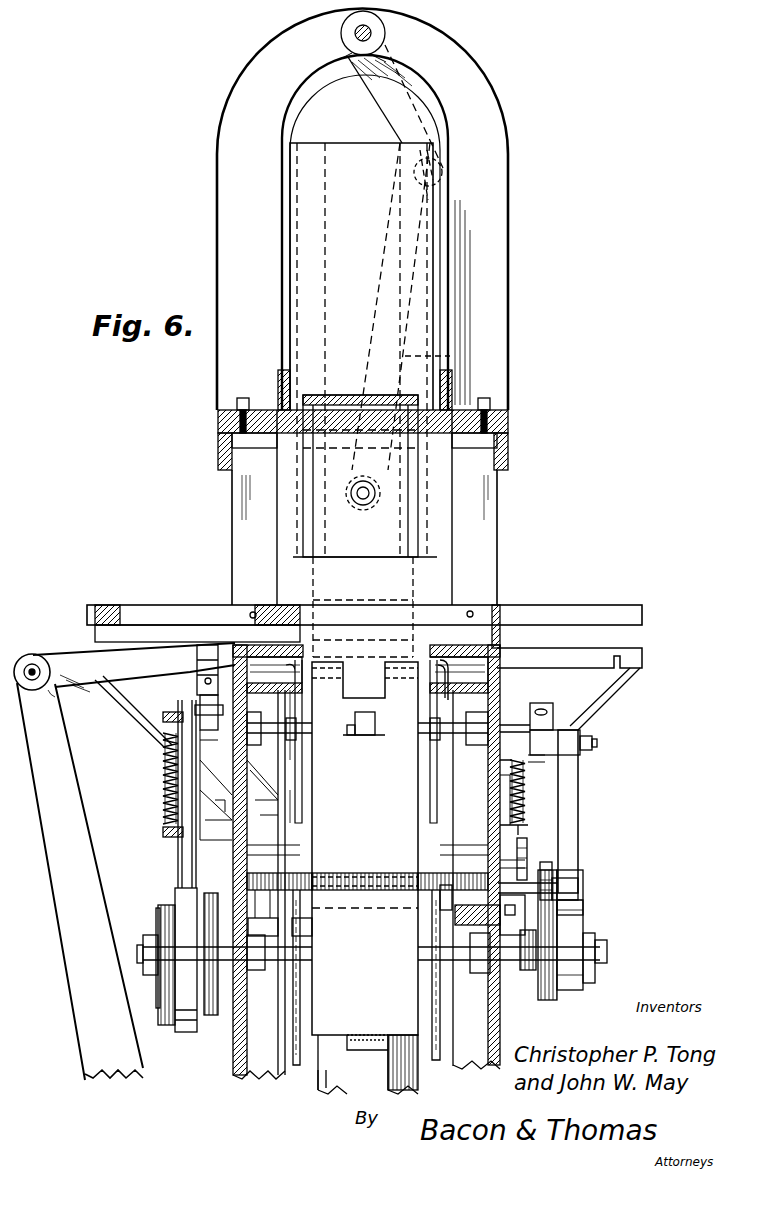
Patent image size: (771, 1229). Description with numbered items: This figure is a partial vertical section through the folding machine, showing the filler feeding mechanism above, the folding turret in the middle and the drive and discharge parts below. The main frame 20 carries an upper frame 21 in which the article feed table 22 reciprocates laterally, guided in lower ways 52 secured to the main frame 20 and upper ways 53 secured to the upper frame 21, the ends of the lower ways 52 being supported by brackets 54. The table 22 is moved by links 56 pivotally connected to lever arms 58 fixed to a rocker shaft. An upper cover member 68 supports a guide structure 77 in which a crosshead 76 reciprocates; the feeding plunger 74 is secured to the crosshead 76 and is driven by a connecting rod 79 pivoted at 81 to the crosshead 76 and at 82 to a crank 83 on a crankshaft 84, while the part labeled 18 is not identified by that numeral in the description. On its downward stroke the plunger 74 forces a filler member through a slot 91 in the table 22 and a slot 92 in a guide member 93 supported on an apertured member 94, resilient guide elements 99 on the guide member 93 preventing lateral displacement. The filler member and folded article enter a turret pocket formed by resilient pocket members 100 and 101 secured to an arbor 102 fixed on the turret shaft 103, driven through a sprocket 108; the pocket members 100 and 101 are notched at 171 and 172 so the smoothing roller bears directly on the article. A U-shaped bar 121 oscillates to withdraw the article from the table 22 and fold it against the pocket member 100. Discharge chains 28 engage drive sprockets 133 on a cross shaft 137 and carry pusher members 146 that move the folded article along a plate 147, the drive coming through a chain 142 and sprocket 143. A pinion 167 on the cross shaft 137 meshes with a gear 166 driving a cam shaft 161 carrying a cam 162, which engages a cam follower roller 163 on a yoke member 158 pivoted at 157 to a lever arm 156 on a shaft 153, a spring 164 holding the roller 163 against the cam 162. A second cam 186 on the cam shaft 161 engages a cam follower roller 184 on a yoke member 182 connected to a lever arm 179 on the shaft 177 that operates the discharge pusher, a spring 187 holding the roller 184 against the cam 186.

The dome housing 18 is at (497, 162).
The crankshaft 84 is at (352, 36).
The crank 83 is at (385, 108).
The pivot 82 is at (415, 175).
The guide structure 77 is at (316, 243).
The connecting rod 79 is at (450, 356).
The upper cover member 68 is at (508, 440).
The crosshead 76 is at (420, 510).
The pivot 81 is at (363, 507).
The upper frame 21 is at (492, 540).
The feeding plunger 74 is at (415, 584).
The upper ways 53 is at (570, 612).
The article feed table 22 is at (103, 607).
The slot 91 is at (160, 628).
The slot 92 is at (300, 640).
The guide member 93 is at (498, 620).
The lower ways 52 is at (590, 660).
The U-shaped bar 121 is at (500, 660).
The turret shaft 103 is at (236, 880).
The main frame 20 is at (500, 1040).
The resilient pocket member 100 is at (418, 828).
The notch 171 is at (357, 736).
The apertured member 94 is at (440, 692).
The resilient guide elements 99 is at (292, 775).
The drive sprockets 133 is at (276, 875).
The pusher members 146 is at (312, 876).
The plate 147 is at (452, 888).
The arbor 102 is at (372, 910).
The cross shaft 137 is at (312, 930).
The notch 172 is at (356, 1052).
The resilient pocket member 101 is at (318, 1075).
The cam shaft 161 is at (268, 972).
The discharge chains 28 is at (293, 1035).
The cam 186 is at (166, 1027).
The pinion 167 is at (190, 893).
The gear 166 is at (211, 1017).
The cam follower roller 184 is at (166, 925).
The yoke member 182 is at (178, 862).
The spring 187 is at (163, 790).
The shaft 177 is at (197, 670).
The lever arm 179 is at (200, 705).
The links 56 is at (62, 658).
The lever arms 58 is at (42, 846).
The brackets 54 is at (125, 700).
The shaft 153 is at (512, 725).
The lever arm 156 is at (540, 752).
The pivot 157 is at (597, 743).
The spring 164 is at (525, 815).
The yoke member 158 is at (578, 842).
The chain 142 is at (527, 855).
The sprocket 143 is at (552, 868).
The sprocket 108 is at (578, 888).
The cam follower roller 163 is at (583, 907).
The cam 162 is at (550, 998).